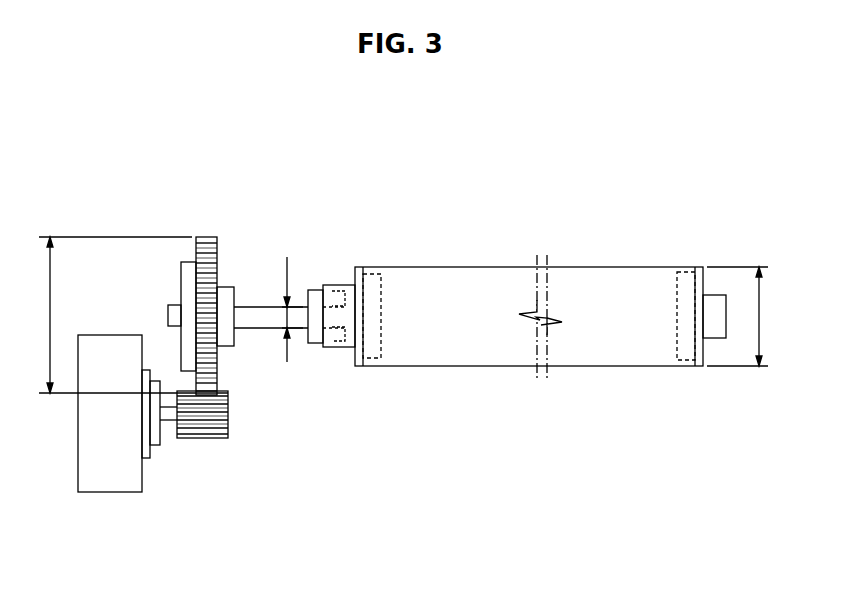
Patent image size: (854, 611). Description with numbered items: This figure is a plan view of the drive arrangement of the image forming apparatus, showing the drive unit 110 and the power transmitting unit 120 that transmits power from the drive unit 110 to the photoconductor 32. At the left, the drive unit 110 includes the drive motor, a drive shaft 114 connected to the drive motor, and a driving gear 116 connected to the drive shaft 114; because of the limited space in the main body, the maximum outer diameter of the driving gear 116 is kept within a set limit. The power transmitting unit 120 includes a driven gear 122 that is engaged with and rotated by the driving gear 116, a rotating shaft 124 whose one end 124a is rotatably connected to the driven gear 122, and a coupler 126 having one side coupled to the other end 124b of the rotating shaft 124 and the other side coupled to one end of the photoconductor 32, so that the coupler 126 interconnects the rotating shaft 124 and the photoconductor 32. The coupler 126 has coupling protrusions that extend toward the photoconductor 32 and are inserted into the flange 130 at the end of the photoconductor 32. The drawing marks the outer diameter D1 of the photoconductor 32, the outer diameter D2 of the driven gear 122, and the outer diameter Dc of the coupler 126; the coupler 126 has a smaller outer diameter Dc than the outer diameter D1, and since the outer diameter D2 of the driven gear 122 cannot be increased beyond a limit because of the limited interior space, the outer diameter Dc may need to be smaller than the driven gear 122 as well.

The photoconductor 32 is at (517, 258).
The drive unit 110 is at (150, 505).
The drive shaft 114 is at (168, 418).
The driving gear 116 is at (213, 427).
The power transmitting unit 120 is at (268, 237).
The driven gear 122 is at (207, 245).
The rotating shaft 124 is at (249, 323).
The one end of the rotating shaft 124a is at (172, 310).
The other end of the rotating shaft 124b is at (353, 310).
The coupler 126 is at (317, 343).
The flange 130 is at (348, 347).
The outer diameter of the photoconductor D1 is at (746, 316).
The outer diameter of the driven gear D2 is at (124, 315).
The outer diameter of the coupler Dc is at (284, 309).